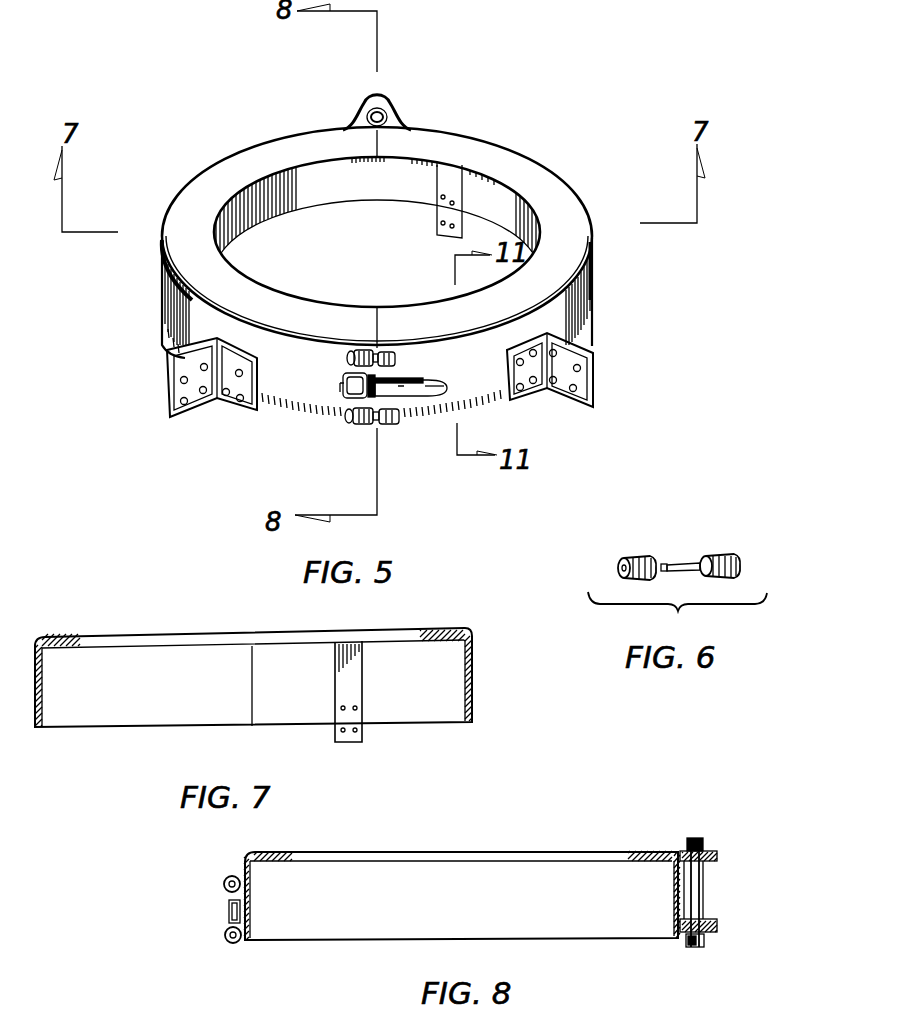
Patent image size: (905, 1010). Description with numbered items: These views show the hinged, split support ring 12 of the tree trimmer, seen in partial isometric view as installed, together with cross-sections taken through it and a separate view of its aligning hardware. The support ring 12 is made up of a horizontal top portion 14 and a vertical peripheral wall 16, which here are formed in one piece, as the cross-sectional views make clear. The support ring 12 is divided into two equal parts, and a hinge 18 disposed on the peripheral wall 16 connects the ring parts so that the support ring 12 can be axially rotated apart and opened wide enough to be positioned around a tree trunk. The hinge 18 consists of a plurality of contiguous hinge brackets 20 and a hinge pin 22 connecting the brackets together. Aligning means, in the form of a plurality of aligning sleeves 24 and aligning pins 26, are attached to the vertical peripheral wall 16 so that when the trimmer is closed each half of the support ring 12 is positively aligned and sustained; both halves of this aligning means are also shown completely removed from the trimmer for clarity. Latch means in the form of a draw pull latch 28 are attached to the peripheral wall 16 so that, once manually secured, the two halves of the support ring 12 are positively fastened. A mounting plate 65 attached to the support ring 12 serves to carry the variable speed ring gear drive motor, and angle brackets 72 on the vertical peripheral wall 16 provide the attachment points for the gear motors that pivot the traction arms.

In FIG. 5, the hinged, split support ring 12 is at (511, 144).
In FIG. 7, the hinged, split support ring 12 is at (80, 638).
In FIG. 8, the hinged, split support ring 12 is at (589, 852).
In FIG. 7, the horizontal top portion 14 is at (440, 636).
In FIG. 8, the horizontal top portion 14 is at (277, 857).
In FIG. 5, the vertical peripheral wall 16 is at (163, 285).
In FIG. 8, the vertical peripheral wall 16 is at (238, 868).
In FIG. 5, the hinge 18 is at (356, 111).
In FIG. 8, the hinge 18 is at (714, 882).
In FIG. 5, the hinge brackets 20 is at (386, 101).
In FIG. 8, the hinge brackets 20 is at (708, 851).
In FIG. 5, the hinge pin 22 is at (394, 115).
In FIG. 8, the hinge pin 22 is at (708, 906).
In FIG. 5, the aligning sleeves 24 is at (353, 427).
In FIG. 6, the aligning sleeves 24 is at (624, 557).
In FIG. 8, the aligning sleeves 24 is at (224, 886).
In FIG. 5, the aligning pins 26 is at (337, 418).
In FIG. 6, the aligning pins 26 is at (680, 563).
In FIG. 5, the draw pull latch 28 is at (427, 401).
In FIG. 8, the draw pull latch 28 is at (228, 915).
In FIG. 5, the mounting plate 65 is at (463, 228).
In FIG. 7, the mounting plate 65 is at (365, 737).
In FIG. 5, the angle bracket 72 is at (165, 395).